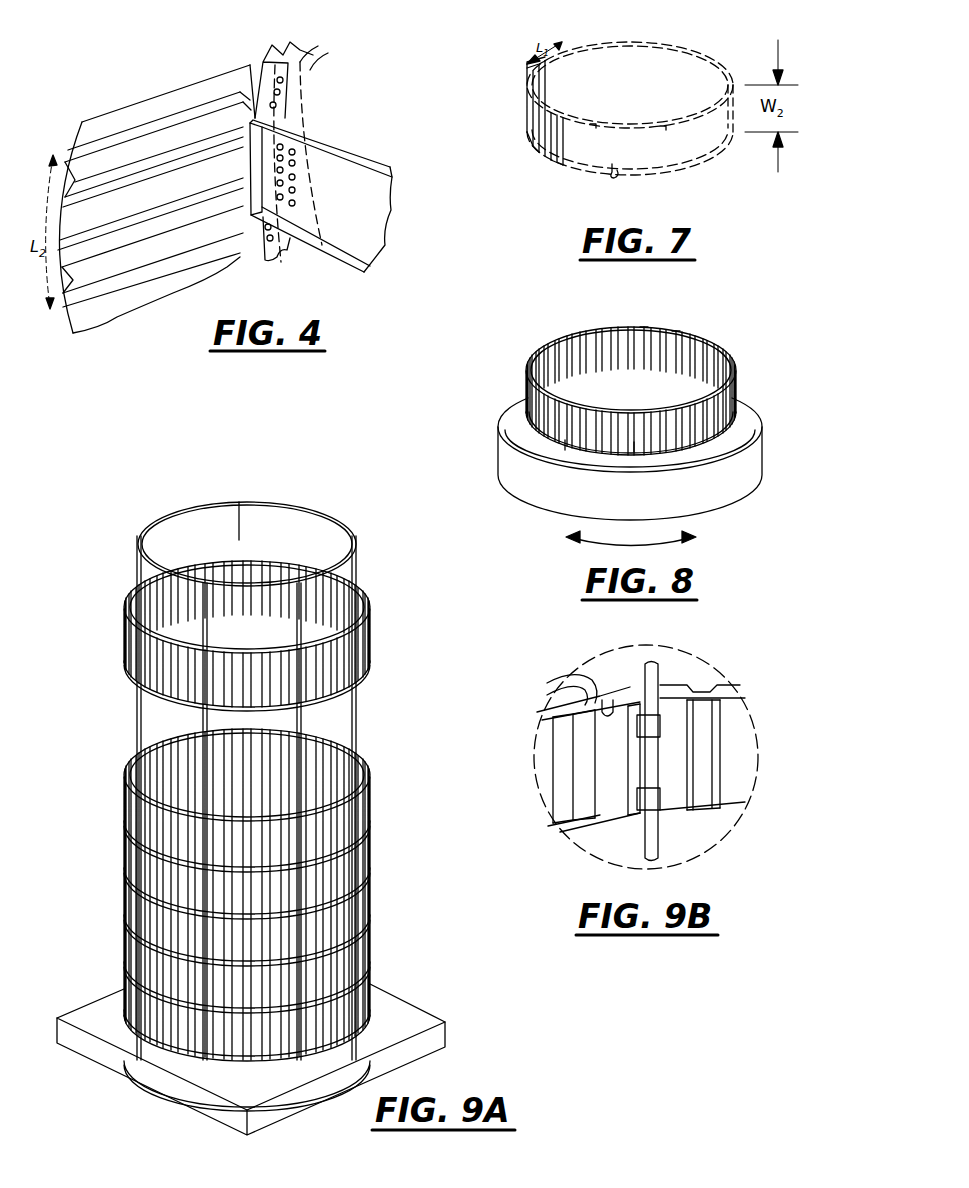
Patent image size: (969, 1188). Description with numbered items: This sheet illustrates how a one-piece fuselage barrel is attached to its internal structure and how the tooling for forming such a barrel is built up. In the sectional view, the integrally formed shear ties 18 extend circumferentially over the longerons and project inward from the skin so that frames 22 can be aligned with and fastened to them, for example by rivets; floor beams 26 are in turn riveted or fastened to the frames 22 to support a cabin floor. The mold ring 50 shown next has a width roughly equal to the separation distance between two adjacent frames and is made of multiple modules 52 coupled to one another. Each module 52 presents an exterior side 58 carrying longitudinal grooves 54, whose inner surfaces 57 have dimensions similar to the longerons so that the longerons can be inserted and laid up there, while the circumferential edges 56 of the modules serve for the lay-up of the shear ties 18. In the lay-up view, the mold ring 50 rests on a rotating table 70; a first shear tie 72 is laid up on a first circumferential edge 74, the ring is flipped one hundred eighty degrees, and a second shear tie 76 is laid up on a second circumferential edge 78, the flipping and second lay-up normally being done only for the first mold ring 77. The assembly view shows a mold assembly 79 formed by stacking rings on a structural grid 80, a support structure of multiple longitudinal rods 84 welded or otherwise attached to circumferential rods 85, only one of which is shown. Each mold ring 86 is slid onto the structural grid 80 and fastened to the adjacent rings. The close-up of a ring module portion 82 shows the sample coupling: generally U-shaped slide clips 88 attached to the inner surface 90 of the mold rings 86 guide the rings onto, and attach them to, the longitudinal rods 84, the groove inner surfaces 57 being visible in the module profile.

In FIG. 4, the shear ties 18 is at (284, 58).
In FIG. 4, the frames 22 is at (318, 78).
In FIG. 4, the floor beams 26 is at (348, 162).
In FIG. 7, the mold ring 50 is at (690, 52).
In FIG. 8, the mold ring 50 is at (730, 362).
In FIG. 7, the modules 52 is at (528, 92).
In FIG. 7, the longitudinal grooves 54 is at (546, 158).
In FIG. 7, the circumferential edges 56 is at (595, 128).
In FIG. 7, the inner surfaces 57 is at (527, 70).
In FIG. 9B, the inner surfaces 57 is at (580, 694).
In FIG. 7, the exterior side 58 is at (530, 135).
In FIG. 8, the rotating table 70 is at (752, 420).
In FIG. 7, the first shear tie 72 is at (620, 176).
In FIG. 8, the first shear tie 72 is at (635, 446).
In FIG. 8, the first circumferential edge 74 is at (566, 446).
In FIG. 7, the second shear tie 76 is at (665, 128).
In FIG. 8, the second shear tie 76 is at (648, 328).
In FIG. 8, the second circumferential edge 78 is at (680, 336).
In FIG. 9A, the mold ring 77 is at (366, 1012).
In FIG. 9A, the mold assembly 79 is at (378, 605).
In FIG. 9A, the structural grid 80 is at (334, 518).
In FIG. 9B, the ring module portion 82 is at (723, 700).
In FIG. 9B, the longitudinal rods 84 is at (650, 830).
In FIG. 9A, the longitudinal rods 84 is at (296, 541).
In FIG. 9A, the circumferential rods 85 is at (239, 500).
In FIG. 9A, the mold rings 86 is at (128, 956).
In FIG. 9B, the slide clips 88 is at (640, 798).
In FIG. 9B, the inner surface 90 is at (603, 700).